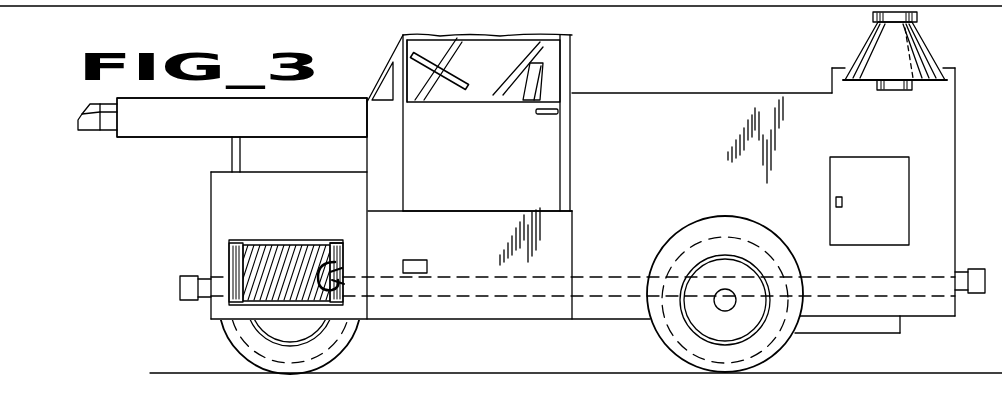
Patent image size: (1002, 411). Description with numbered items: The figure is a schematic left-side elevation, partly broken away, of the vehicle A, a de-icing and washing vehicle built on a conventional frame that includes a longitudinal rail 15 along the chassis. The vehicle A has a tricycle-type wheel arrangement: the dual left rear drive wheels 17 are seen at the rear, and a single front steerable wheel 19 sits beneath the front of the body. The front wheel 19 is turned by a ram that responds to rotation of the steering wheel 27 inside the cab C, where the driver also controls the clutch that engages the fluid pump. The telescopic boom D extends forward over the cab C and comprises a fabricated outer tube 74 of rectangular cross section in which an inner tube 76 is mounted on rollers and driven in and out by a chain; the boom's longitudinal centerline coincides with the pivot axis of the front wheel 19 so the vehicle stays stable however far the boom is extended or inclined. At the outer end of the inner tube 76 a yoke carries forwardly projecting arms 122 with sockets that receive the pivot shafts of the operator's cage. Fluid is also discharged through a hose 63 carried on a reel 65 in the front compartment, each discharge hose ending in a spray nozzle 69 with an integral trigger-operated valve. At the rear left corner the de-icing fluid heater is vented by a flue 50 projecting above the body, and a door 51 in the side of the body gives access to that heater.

The vehicle A is at (664, 72).
The cab C is at (573, 51).
The boom D is at (145, 136).
The longitudinal rail 15 is at (543, 297).
The dual left rear drive wheels 17 is at (668, 348).
The front steerable wheel 19 is at (240, 345).
The steering wheel 27 is at (458, 67).
The flue 50 is at (902, 50).
The door 51 is at (888, 216).
The hose 63 is at (262, 255).
The reel 65 is at (328, 247).
The spray nozzle 69 is at (340, 268).
The outer tube 74 is at (262, 126).
The inner tube 76 is at (108, 130).
The yoke arms 122 is at (88, 125).